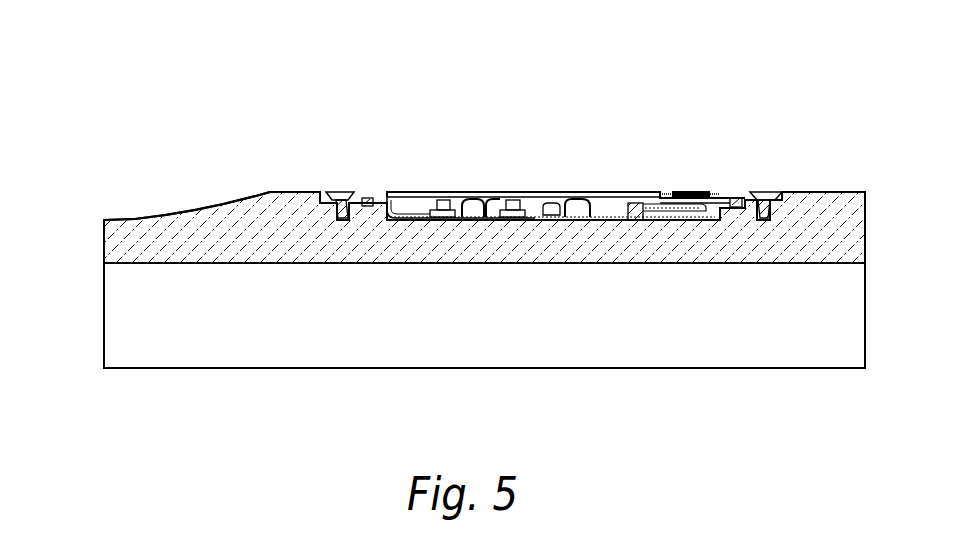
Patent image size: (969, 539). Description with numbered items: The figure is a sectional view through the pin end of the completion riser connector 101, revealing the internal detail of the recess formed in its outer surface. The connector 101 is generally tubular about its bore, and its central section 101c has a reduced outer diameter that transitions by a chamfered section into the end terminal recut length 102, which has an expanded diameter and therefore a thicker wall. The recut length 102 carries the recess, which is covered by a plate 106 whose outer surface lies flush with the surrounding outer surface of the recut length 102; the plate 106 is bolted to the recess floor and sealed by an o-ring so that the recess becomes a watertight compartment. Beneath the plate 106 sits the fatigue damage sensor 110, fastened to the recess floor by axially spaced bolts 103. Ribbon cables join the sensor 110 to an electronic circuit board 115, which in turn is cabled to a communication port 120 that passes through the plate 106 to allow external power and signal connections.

The completion riser connector 101 is at (182, 171).
The central section 101c is at (118, 218).
The end terminal recut length 102 is at (290, 192).
The bolts 103 is at (509, 192).
The plate 106 is at (400, 192).
The fatigue damage sensor 110 is at (490, 224).
The electronic circuit board 115 is at (612, 224).
The communication port 120 is at (700, 191).